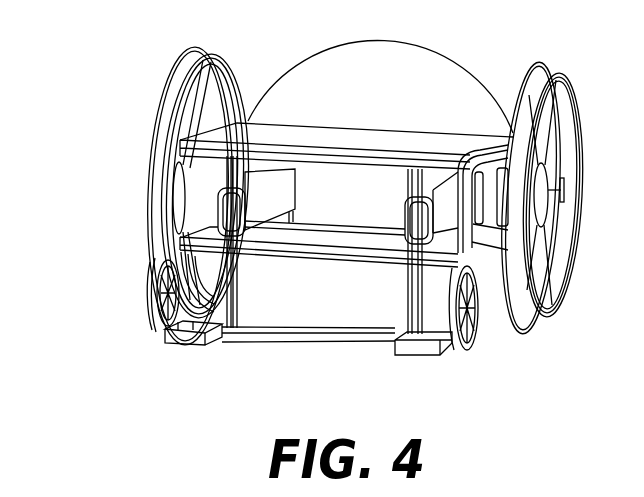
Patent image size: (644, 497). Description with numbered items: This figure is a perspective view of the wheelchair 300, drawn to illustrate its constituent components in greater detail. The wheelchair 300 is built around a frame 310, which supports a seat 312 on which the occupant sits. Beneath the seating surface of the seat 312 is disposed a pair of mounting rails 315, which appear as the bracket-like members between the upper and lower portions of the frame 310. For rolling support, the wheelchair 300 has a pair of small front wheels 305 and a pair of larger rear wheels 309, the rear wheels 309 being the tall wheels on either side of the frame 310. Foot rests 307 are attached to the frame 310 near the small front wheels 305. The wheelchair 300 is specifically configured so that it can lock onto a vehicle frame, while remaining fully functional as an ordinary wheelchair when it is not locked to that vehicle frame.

The wheelchair 300 is at (313, 237).
The small front wheels 305 is at (447, 376).
The foot rests 307 is at (195, 342).
The larger rear wheels 309 is at (146, 196).
The frame 310 is at (163, 201).
The seat 312 is at (442, 77).
The mounting rails 315 is at (415, 223).